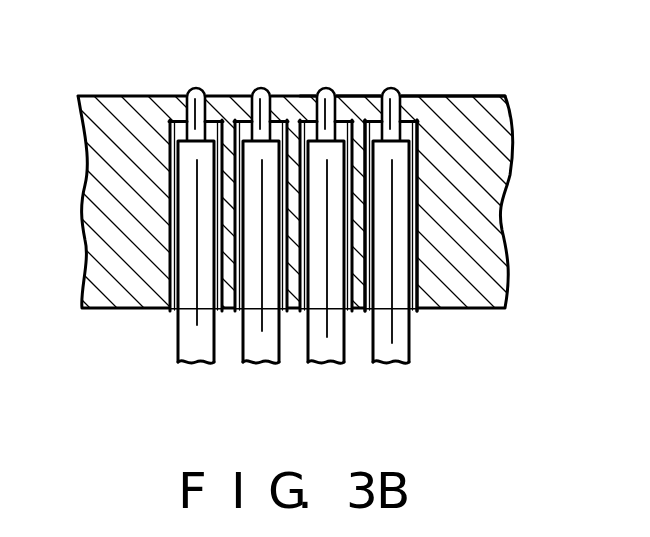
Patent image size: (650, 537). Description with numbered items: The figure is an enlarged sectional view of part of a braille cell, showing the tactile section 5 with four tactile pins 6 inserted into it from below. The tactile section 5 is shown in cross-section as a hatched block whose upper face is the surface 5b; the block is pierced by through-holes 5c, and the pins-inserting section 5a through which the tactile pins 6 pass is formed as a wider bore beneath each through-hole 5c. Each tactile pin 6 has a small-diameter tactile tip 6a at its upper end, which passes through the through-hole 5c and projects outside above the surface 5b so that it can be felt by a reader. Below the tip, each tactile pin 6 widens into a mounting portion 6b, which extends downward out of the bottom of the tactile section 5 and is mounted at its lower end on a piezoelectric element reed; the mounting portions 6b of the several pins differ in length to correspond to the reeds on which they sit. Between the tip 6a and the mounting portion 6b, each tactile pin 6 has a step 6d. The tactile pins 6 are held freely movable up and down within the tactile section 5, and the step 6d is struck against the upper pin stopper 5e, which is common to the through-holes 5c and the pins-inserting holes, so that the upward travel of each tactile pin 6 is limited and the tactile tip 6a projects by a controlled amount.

The tactile section 5 is at (496, 201).
The pins-inserting section 5a is at (413, 130).
The surface of the tactile section 5b is at (452, 96).
The through-holes 5c is at (370, 103).
The upper pin stopper 5e is at (306, 119).
The tactile pins 6 is at (345, 328).
The tactile tip 6a is at (328, 92).
The mounting portion 6b is at (323, 343).
The step 6d is at (293, 126).